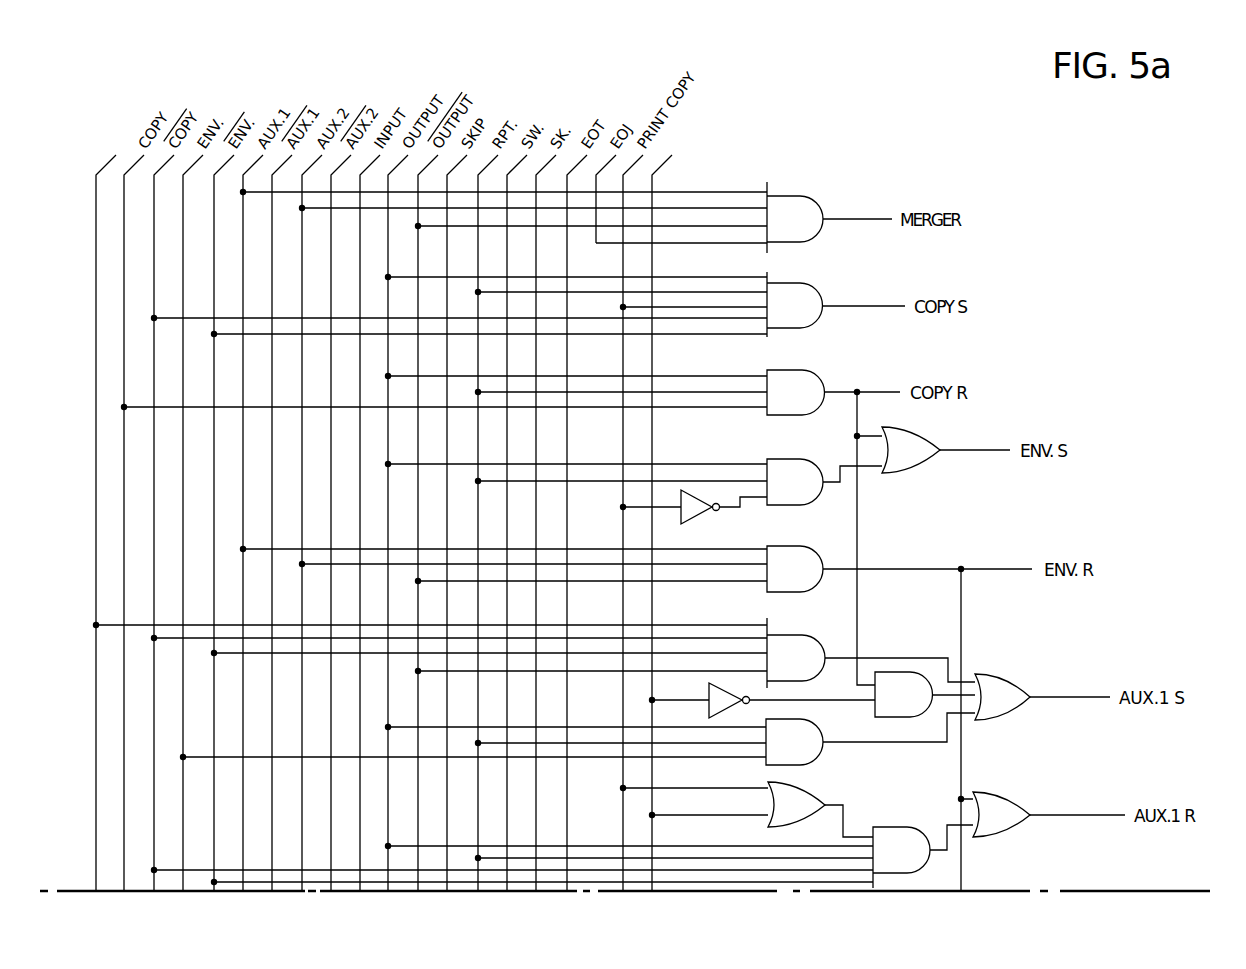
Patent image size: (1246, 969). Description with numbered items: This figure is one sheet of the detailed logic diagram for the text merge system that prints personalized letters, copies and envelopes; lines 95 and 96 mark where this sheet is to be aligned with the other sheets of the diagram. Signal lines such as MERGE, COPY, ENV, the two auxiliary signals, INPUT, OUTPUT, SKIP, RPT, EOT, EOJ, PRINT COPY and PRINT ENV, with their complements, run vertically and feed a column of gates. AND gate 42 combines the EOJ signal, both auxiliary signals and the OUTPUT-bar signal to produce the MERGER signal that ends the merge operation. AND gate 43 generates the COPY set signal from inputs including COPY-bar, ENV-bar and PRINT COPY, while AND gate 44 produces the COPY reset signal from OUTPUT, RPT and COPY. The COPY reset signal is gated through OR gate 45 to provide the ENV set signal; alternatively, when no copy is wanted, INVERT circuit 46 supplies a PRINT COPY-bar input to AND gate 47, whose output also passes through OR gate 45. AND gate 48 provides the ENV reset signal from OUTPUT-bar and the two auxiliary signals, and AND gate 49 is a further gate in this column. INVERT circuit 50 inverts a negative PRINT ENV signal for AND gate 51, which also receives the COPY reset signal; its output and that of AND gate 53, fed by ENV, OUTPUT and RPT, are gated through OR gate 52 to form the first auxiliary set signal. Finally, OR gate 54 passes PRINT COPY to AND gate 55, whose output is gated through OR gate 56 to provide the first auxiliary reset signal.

The AND gate 42 is at (815, 203).
The AND gate 43 is at (815, 292).
The AND gate 44 is at (815, 382).
The OR gate 45 is at (928, 441).
The INVERT circuit 46 is at (698, 512).
The AND gate 47 is at (806, 462).
The AND gate 48 is at (808, 552).
The AND gate 49 is at (802, 642).
The INVERT circuit 50 is at (706, 697).
The AND gate 51 is at (880, 718).
The OR gate 52 is at (1010, 684).
The AND gate 53 is at (820, 748).
The OR gate 54 is at (822, 794).
The AND gate 55 is at (912, 824).
The OR gate 56 is at (1015, 800).
The alignment line 95 is at (96, 706).
The alignment line 96 is at (653, 441).